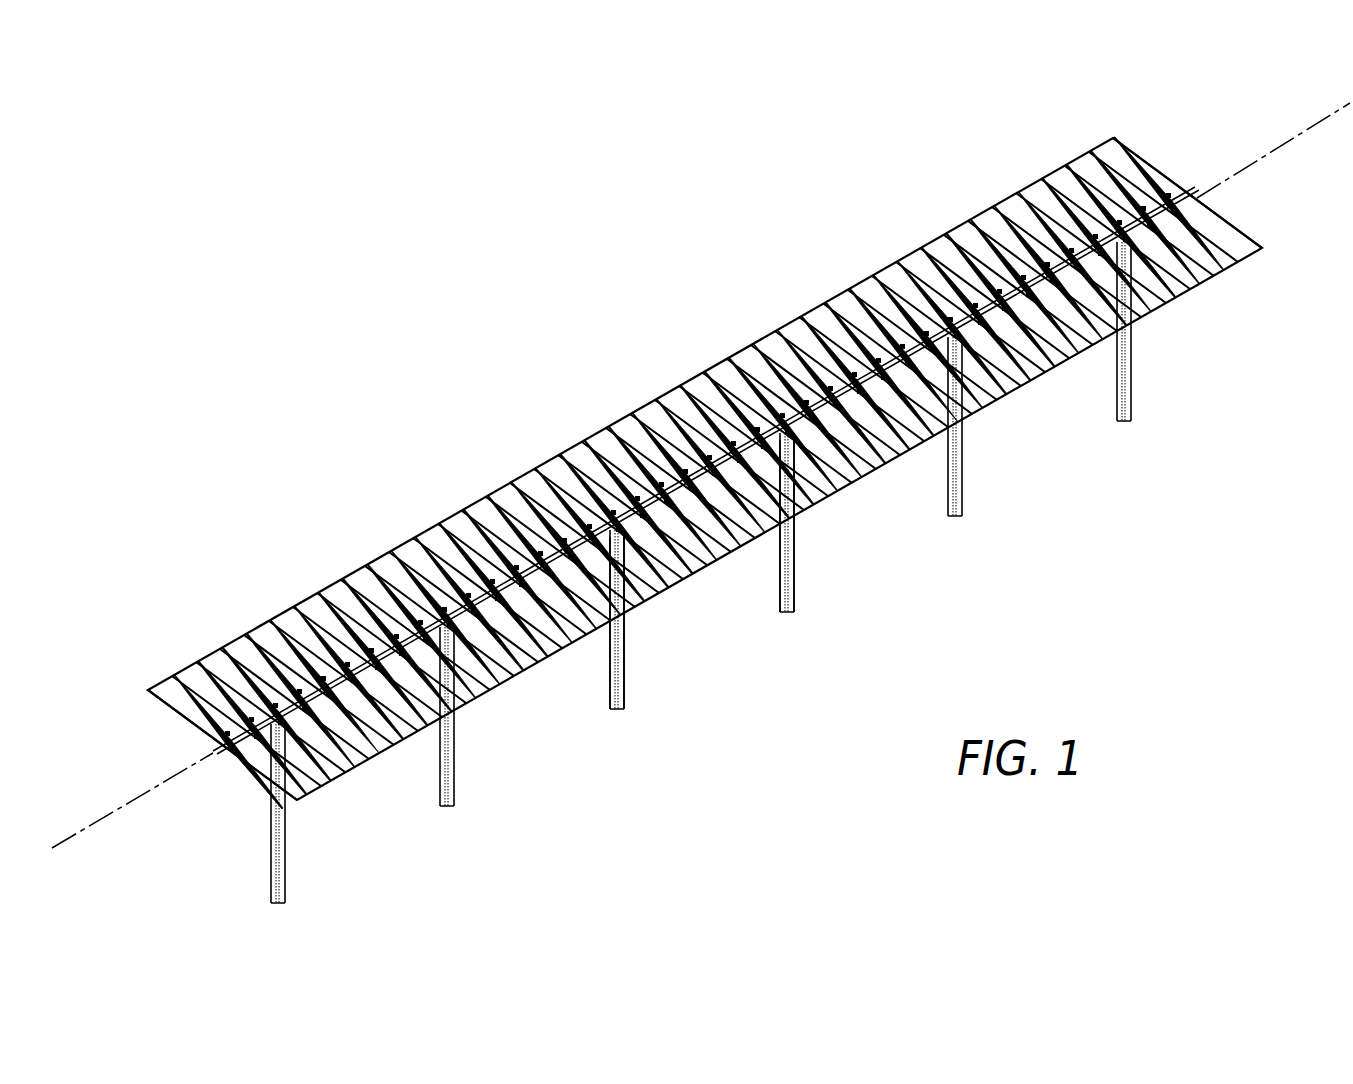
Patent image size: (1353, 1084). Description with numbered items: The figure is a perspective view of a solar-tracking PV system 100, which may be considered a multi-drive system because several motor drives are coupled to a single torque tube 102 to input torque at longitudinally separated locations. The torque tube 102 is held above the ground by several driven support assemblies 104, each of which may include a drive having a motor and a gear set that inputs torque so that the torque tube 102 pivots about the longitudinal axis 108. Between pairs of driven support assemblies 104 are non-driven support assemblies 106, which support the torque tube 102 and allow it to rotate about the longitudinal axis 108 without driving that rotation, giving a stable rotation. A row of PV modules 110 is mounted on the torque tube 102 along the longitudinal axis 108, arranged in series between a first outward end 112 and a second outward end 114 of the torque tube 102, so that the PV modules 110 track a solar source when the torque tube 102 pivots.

The solar-tracking PV system 100 is at (701, 499).
The torque tube 102 is at (540, 617).
The driven support assembly 104 is at (962, 482).
The non-driven support assembly 106 is at (625, 677).
The longitudinal axis 108 is at (1272, 145).
The PV module 110 is at (780, 348).
The first outward end 112 is at (188, 727).
The second outward end 114 is at (1197, 198).